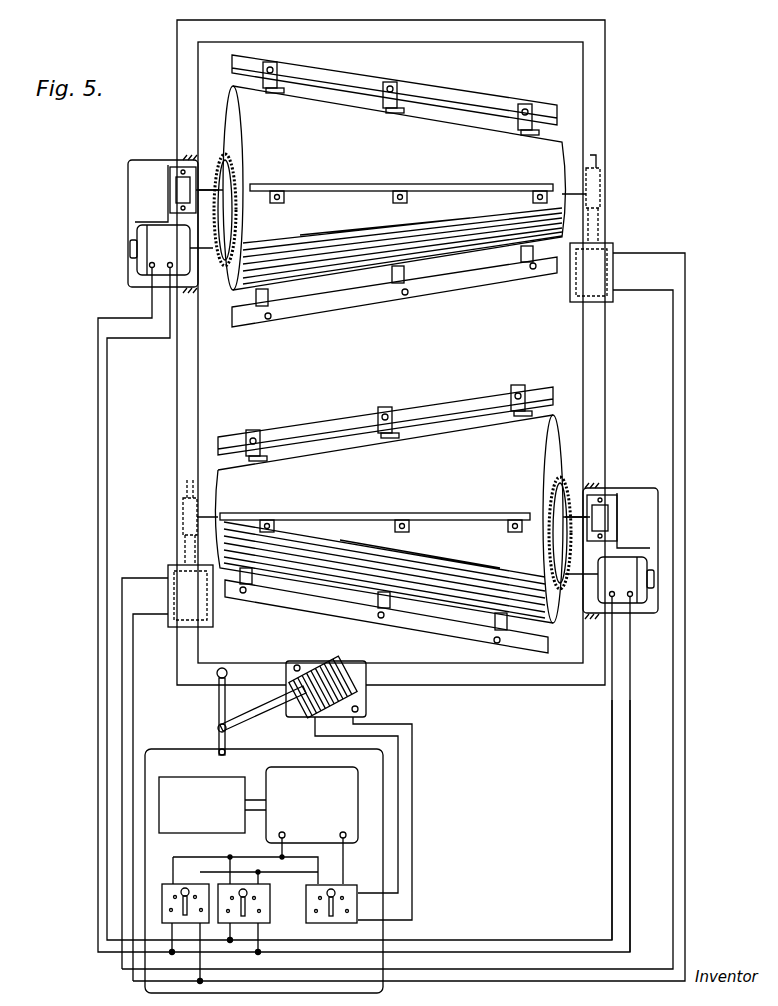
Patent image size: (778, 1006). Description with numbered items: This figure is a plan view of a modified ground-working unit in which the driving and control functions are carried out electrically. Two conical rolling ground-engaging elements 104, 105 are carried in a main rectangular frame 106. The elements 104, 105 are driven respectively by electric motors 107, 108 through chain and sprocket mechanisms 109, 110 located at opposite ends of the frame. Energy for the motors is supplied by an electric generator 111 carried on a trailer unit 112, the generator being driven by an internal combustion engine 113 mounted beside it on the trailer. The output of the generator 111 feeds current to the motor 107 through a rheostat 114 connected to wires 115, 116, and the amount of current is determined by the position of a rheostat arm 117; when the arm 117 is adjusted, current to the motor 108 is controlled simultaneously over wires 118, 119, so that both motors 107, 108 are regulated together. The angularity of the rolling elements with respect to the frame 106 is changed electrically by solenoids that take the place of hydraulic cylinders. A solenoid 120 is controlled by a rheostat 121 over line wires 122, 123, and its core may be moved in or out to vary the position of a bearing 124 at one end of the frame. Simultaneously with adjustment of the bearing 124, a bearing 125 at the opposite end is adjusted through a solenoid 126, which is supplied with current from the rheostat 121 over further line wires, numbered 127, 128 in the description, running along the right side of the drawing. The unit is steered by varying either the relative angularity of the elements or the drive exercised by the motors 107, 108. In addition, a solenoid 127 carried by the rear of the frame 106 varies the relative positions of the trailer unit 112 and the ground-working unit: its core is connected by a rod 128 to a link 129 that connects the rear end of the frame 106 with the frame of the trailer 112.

The conical rolling ground-engaging element 104 is at (452, 133).
The conical rolling ground-engaging element 105 is at (264, 470).
The main rectangular frame 106 is at (606, 88).
The electric motor 107 is at (155, 237).
The electric motor 108 is at (628, 572).
The chain and sprocket mechanism 109 is at (213, 152).
The chain and sprocket mechanism 110 is at (568, 480).
The electric generator 111 is at (348, 780).
The trailer unit 112 is at (378, 827).
The internal combustion engine 113 is at (192, 787).
The rheostat 114 is at (255, 904).
The wire 115 is at (97, 812).
The wire 116 is at (106, 773).
The rheostat arm 117 is at (245, 899).
The wire 118 is at (611, 822).
The wire 119 is at (629, 717).
The solenoid 120 is at (214, 606).
The rheostat 121 is at (168, 884).
The line wire 122 is at (121, 680).
The line wire 123 is at (132, 722).
The bearing 124 is at (182, 514).
The bearing 125 is at (601, 184).
The solenoid 126 is at (575, 285).
The solenoid 127 is at (333, 666).
The rod 128 is at (255, 712).
The link 129 is at (219, 705).